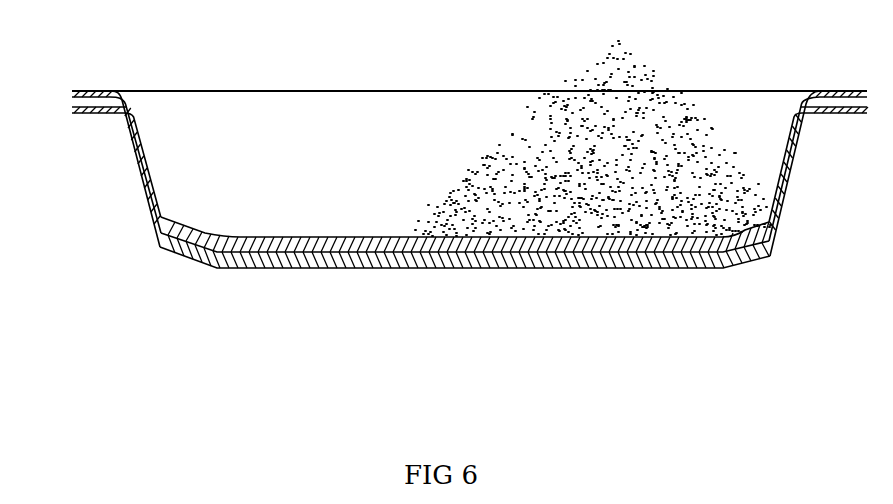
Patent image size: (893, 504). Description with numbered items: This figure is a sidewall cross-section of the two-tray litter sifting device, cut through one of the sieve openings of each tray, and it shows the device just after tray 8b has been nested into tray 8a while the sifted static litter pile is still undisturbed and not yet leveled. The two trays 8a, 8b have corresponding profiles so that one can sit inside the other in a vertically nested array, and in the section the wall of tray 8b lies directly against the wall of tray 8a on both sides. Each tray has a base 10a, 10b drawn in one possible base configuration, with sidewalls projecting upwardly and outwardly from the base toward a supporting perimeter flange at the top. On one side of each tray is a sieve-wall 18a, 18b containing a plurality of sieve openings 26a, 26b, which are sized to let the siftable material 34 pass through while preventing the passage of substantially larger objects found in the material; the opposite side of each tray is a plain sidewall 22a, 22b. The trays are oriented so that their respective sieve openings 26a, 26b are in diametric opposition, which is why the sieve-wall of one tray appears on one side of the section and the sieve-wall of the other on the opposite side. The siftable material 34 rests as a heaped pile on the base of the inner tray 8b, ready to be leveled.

The tray 8a is at (833, 99).
The tray 8b is at (97, 91).
The tray base 10a is at (410, 262).
The tray base 10b is at (493, 245).
The sieve-wall 18a is at (810, 122).
The sieve-wall 18b is at (118, 113).
The sidewall 22a is at (140, 178).
The sidewall 22b is at (788, 198).
The sieve openings 26a is at (797, 165).
The sieve openings 26b is at (136, 147).
The siftable material 34 is at (611, 172).